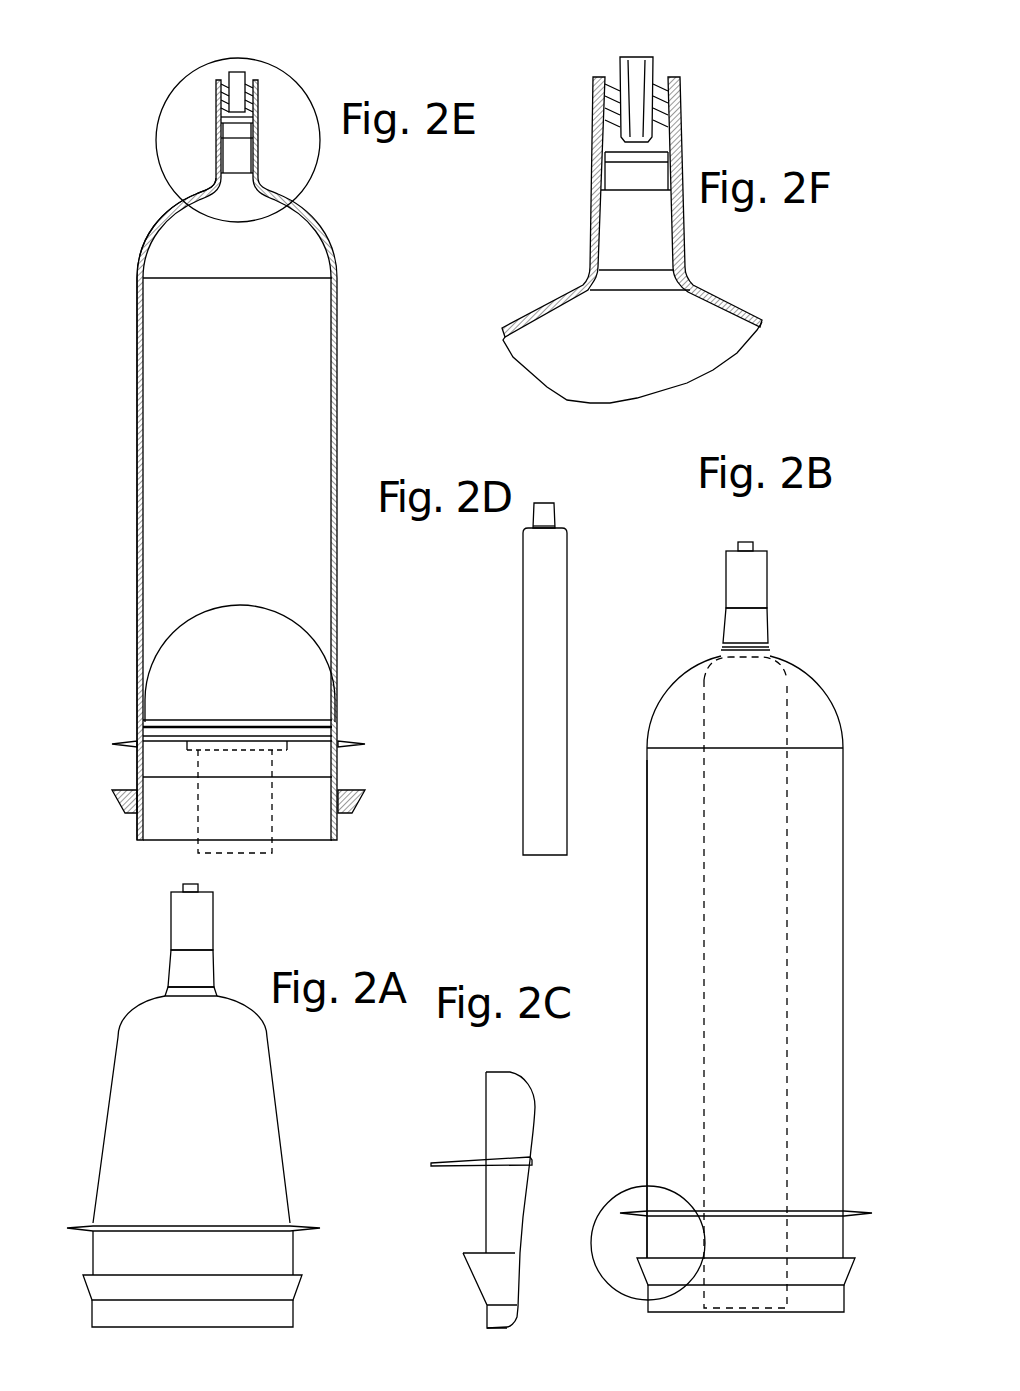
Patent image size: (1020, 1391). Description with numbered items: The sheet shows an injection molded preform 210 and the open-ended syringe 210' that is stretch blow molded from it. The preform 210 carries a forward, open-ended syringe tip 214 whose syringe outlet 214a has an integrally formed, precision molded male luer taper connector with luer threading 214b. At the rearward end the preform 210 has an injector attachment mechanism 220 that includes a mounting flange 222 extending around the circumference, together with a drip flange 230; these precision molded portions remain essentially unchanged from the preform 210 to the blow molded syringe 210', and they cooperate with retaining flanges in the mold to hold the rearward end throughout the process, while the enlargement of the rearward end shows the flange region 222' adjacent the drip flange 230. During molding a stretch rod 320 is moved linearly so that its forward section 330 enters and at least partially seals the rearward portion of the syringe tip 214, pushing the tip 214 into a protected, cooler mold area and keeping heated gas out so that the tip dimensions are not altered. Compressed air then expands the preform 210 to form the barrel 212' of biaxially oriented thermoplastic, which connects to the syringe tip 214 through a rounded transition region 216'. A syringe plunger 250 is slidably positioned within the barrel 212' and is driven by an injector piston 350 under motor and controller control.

In FIG. 2A, the preform 210 is at (170, 1096).
In FIG. 2E, the syringe 210' is at (192, 460).
In FIG. 2B, the syringe 210' is at (713, 1003).
In FIG. 2E, the barrel 212' is at (97, 559).
In FIG. 2B, the barrel 212' is at (620, 972).
In FIG. 2C, the barrel 212' is at (481, 1200).
In FIG. 2E, the syringe tip 214 is at (193, 102).
In FIG. 2F, the syringe tip 214 is at (715, 88).
In FIG. 2B, the syringe tip 214 is at (785, 560).
In FIG. 2A, the syringe tip 214 is at (226, 930).
In FIG. 2E, the syringe outlet 214a is at (241, 62).
In FIG. 2F, the syringe outlet 214a is at (633, 48).
In FIG. 2B, the syringe outlet 214a is at (723, 540).
In FIG. 2A, the syringe outlet 214a is at (212, 886).
In FIG. 2E, the luer threading 214b is at (255, 85).
In FIG. 2F, the luer threading 214b is at (670, 110).
In FIG. 2E, the transition region 216' is at (137, 215).
In FIG. 2F, the transition region 216' is at (607, 240).
In FIG. 2B, the transition region 216' is at (718, 668).
In FIG. 2E, the injector attachment mechanism 220 is at (107, 790).
In FIG. 2B, the injector attachment mechanism 220 is at (860, 1237).
In FIG. 2A, the injector attachment mechanism 220 is at (67, 1255).
In FIG. 2E, the mounting flange 222 is at (282, 788).
In FIG. 2A, the mounting flange 222 is at (241, 1301).
In FIG. 2C, the mounting flange 222 is at (439, 1255).
In FIG. 2B, the skirt region 222' is at (637, 1222).
In FIG. 2E, the drip flange 230 is at (110, 730).
In FIG. 2B, the drip flange 230 is at (630, 1208).
In FIG. 2A, the drip flange 230 is at (320, 1210).
In FIG. 2C, the drip flange 230 is at (440, 1147).
In FIG. 2E, the syringe plunger 250 is at (297, 665).
In FIG. 2D, the stretch rod 320 is at (505, 605).
In FIG. 2B, the stretch rod 320 is at (665, 832).
In FIG. 2D, the forward section 330 is at (557, 502).
In FIG. 2B, the forward section 330 is at (755, 632).
In FIG. 2E, the piston 350 is at (260, 790).